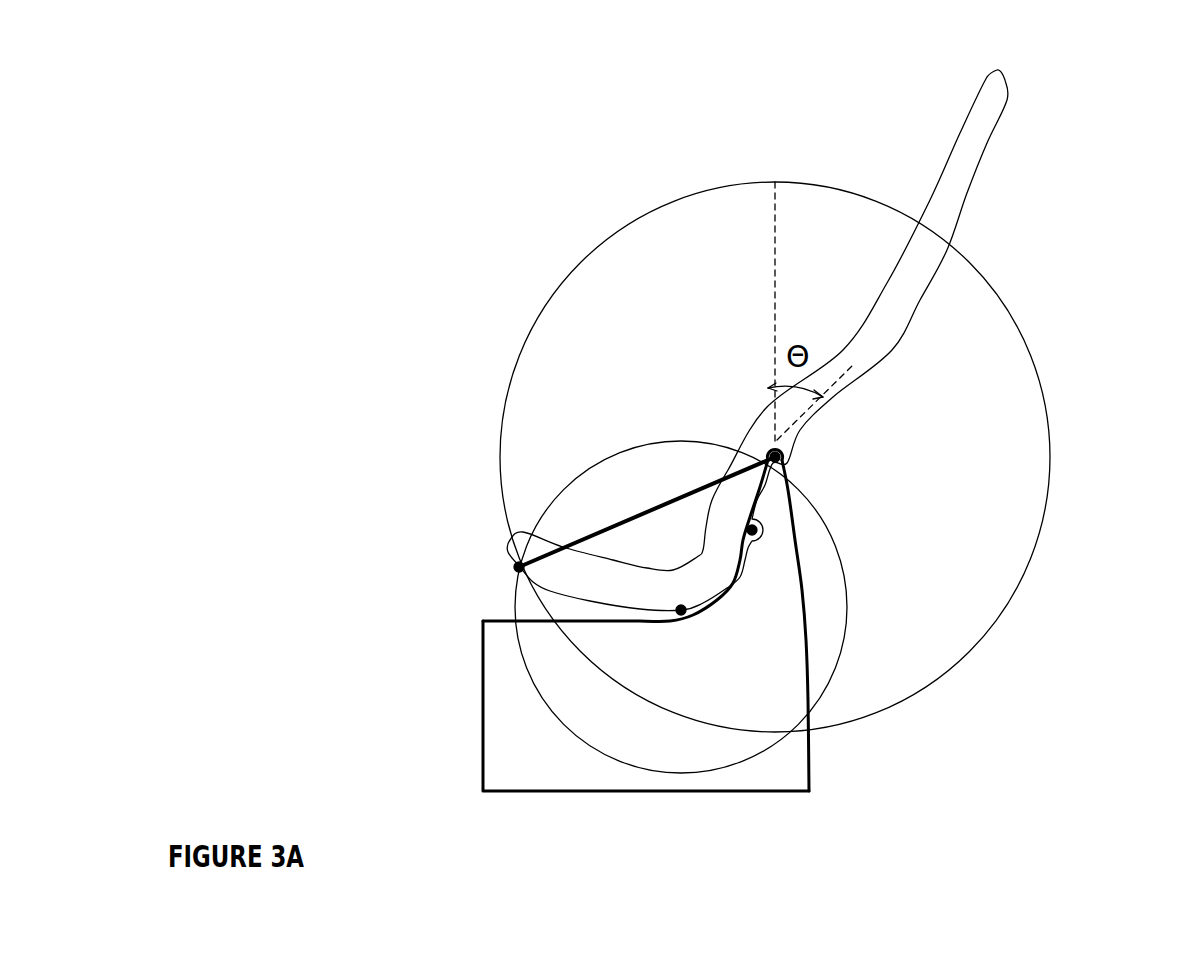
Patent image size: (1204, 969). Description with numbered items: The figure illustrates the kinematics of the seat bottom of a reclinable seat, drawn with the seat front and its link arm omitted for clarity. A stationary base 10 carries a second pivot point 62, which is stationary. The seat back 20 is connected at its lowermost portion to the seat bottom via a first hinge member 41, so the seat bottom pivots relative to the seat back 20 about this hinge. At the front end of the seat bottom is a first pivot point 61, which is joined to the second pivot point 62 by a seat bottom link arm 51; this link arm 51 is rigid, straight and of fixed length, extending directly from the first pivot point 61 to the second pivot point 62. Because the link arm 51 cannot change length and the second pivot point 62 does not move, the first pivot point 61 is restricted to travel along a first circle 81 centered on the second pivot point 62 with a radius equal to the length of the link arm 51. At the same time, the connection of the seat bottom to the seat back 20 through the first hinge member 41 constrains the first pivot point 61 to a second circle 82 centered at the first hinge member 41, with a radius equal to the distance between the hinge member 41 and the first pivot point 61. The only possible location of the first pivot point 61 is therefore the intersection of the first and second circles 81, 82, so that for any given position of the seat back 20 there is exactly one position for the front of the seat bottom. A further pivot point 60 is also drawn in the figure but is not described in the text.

The stationary base 10 is at (806, 645).
The seat back 20 is at (971, 186).
The first hinge member 41 is at (681, 610).
The seat bottom link arm 51 is at (647, 510).
The pivot point 60 is at (763, 530).
The first pivot point 61 is at (519, 568).
The second pivot point 62 is at (782, 452).
The first circle 81 is at (1043, 408).
The second circle 82 is at (567, 487).